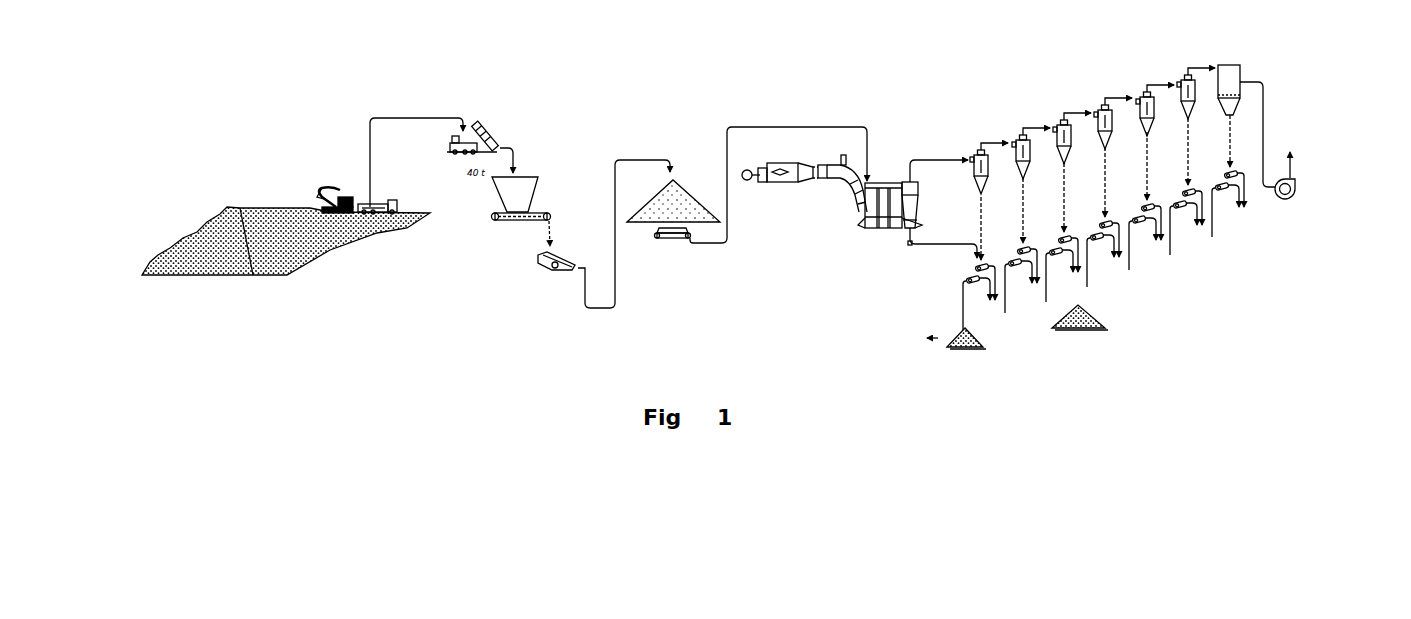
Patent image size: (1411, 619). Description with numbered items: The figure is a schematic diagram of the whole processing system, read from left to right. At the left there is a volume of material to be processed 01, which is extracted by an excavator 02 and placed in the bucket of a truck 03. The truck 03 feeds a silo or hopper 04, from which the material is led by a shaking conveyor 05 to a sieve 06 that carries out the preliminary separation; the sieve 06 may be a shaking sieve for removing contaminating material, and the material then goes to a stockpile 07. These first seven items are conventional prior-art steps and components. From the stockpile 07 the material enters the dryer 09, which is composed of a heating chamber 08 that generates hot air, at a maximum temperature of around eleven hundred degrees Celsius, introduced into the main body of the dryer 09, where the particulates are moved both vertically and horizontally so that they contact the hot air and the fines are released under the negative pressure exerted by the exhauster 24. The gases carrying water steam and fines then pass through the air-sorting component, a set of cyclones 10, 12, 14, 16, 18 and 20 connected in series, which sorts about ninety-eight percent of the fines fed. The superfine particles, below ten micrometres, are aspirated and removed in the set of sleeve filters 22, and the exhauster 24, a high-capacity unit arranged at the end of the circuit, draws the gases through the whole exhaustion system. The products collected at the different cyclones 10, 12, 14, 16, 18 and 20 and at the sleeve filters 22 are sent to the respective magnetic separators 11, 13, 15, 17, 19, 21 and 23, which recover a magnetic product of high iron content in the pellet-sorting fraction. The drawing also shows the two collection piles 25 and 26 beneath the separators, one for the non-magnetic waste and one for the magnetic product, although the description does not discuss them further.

The volume of material to be processed 01 is at (270, 205).
The excavator 02 is at (342, 190).
The truck 03 is at (383, 199).
The silo or hopper 04 is at (530, 175).
The shaking conveyor 05 is at (547, 205).
The sieve 06 is at (565, 250).
The stockpile 07 is at (672, 145).
The heating chamber 08 is at (777, 127).
The dryer 09 is at (890, 170).
The cyclone 10 is at (982, 125).
The magnetic separator 11 is at (990, 260).
The cyclone 12 is at (1022, 105).
The magnetic separator 13 is at (1030, 245).
The cyclone 14 is at (1063, 87).
The magnetic separator 15 is at (1072, 232).
The cyclone 16 is at (1105, 72).
The magnetic separator 17 is at (1113, 217).
The cyclone 18 is at (1145, 57).
The magnetic separator 19 is at (1154, 201).
The cyclone 20 is at (1187, 42).
The magnetic separator 21 is at (1195, 186).
The sleeve filters 22 is at (1230, 52).
The magnetic separator 23 is at (1236, 170).
The exhauster 24 is at (1298, 180).
The non-magnetic waste pile 25 is at (953, 331).
The magnetic product pile 26 is at (1093, 313).